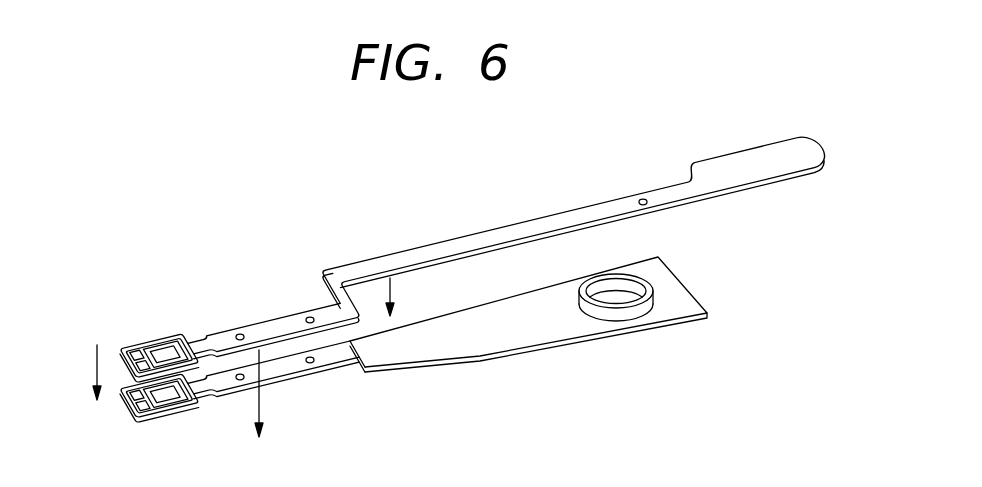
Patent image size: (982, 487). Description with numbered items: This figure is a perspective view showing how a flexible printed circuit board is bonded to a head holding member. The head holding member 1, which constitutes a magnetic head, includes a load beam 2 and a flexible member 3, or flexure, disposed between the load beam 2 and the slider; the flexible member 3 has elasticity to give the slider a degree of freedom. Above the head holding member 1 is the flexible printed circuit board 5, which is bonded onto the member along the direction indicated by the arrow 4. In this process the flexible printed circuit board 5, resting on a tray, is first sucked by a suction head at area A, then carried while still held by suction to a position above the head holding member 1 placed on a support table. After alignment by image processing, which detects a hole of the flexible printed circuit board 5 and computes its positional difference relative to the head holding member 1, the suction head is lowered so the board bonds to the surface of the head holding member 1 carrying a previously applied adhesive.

The head holding member 1 is at (164, 203).
The load beam 2 is at (497, 332).
The flexible member (flexure) 3 is at (162, 396).
The arrow 4 is at (97, 362).
The flexible printed circuit board 5 is at (493, 237).
The area A is at (255, 290).